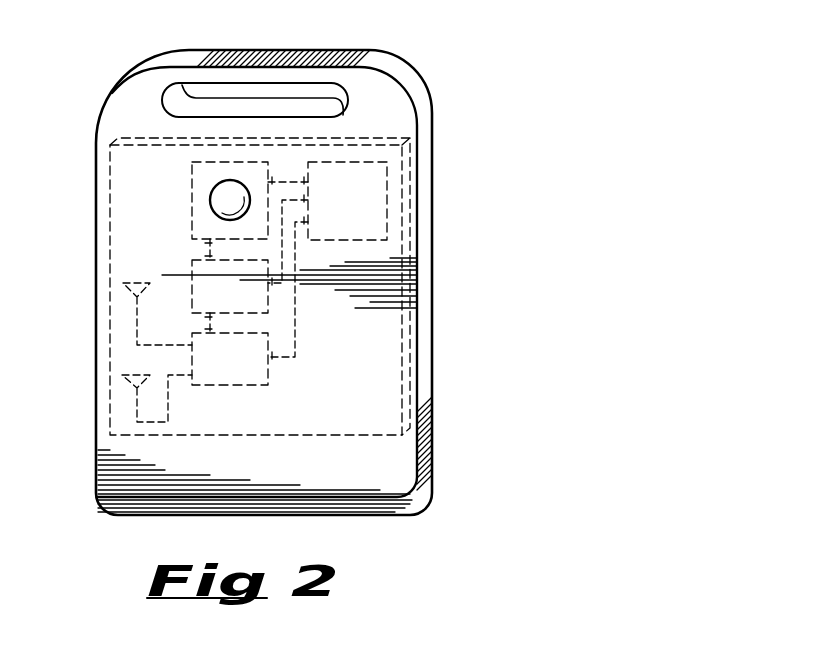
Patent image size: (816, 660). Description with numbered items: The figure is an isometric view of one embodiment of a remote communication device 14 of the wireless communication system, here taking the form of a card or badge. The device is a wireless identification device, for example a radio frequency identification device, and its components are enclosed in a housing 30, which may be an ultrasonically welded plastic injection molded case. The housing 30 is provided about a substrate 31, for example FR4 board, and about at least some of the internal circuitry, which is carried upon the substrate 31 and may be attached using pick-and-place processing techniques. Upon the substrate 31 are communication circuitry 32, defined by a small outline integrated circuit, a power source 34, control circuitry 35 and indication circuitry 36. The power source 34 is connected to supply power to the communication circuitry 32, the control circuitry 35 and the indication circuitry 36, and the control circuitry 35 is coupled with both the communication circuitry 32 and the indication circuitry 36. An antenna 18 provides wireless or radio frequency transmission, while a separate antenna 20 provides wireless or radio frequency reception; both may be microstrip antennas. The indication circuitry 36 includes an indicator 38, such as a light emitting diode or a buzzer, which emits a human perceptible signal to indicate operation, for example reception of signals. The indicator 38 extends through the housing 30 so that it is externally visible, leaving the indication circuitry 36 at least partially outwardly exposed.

The remote communication device 14 is at (497, 108).
The housing 30 is at (355, 53).
The substrate 31 is at (140, 137).
The indicator 38 is at (224, 193).
The indication circuitry 36 is at (192, 200).
The antenna 18 is at (125, 292).
The antenna 20 is at (125, 382).
The power source 34 is at (387, 200).
The control circuitry 35 is at (268, 307).
The communication circuitry 32 is at (268, 382).